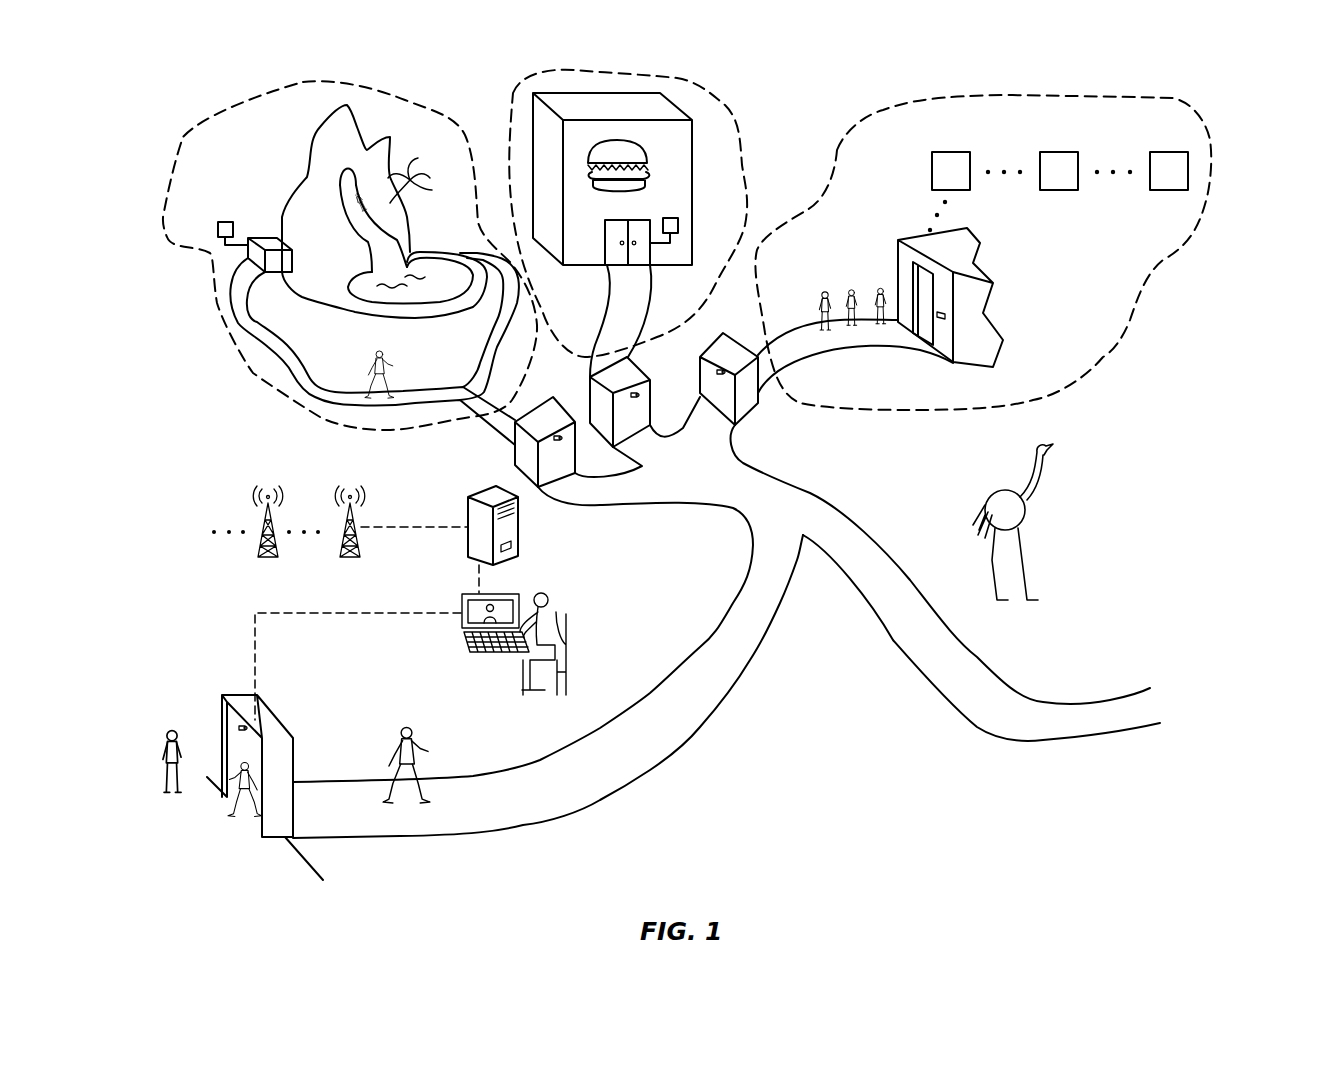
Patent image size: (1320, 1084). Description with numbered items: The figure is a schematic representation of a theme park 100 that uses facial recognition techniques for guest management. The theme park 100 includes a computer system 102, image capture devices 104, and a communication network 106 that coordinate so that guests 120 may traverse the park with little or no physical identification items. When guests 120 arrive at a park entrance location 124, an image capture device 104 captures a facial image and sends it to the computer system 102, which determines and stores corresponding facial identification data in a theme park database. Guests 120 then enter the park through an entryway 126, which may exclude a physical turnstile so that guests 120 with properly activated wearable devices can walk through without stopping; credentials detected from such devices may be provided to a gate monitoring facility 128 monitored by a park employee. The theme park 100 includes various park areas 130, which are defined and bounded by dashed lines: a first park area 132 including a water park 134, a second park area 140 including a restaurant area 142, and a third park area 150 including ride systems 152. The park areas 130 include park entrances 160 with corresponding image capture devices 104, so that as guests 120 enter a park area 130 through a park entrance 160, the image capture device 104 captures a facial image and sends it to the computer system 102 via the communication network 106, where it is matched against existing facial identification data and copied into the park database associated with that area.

The theme park 100 is at (232, 411).
The computer system 102 is at (479, 479).
The image capture device 104 is at (225, 222).
The communication network 106 is at (283, 464).
The guest 120 is at (370, 195).
The park entrance location 124 is at (208, 650).
The entryway 126 is at (275, 717).
The gate monitoring facility 128 is at (495, 667).
The park area 130 is at (176, 96).
The first park area 132 is at (400, 103).
The water park 134 is at (300, 175).
The second park area 140 is at (700, 90).
The restaurant area 142 is at (692, 192).
The third park area 150 is at (1102, 357).
The ride system 152 is at (952, 152).
The park entrance 160 is at (525, 402).